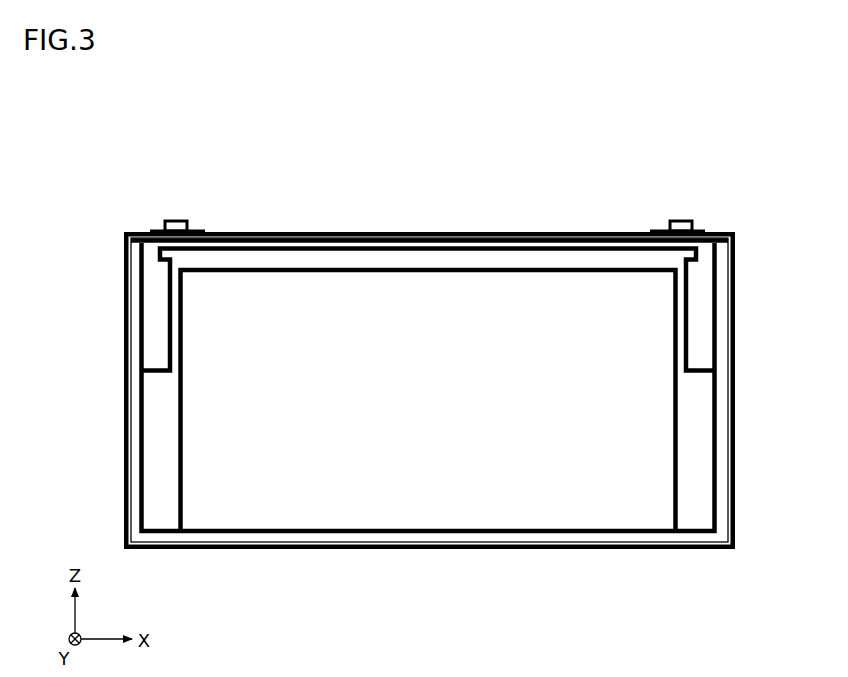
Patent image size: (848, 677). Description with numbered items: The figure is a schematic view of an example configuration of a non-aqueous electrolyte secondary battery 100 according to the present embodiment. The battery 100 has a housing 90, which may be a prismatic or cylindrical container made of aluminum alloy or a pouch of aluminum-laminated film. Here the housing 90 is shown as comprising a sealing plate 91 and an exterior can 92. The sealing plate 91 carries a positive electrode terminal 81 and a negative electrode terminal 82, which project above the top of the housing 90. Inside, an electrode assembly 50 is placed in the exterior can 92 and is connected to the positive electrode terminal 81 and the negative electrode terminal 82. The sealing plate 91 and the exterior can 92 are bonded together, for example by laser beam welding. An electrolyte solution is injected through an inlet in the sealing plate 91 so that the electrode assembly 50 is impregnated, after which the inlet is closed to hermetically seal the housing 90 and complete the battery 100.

The battery 100 is at (130, 142).
The housing 90 is at (583, 153).
The sealing plate 91 is at (556, 233).
The exterior can 92 is at (731, 258).
The electrode assembly 50 is at (430, 488).
The positive electrode terminal 81 is at (682, 220).
The negative electrode terminal 82 is at (176, 220).